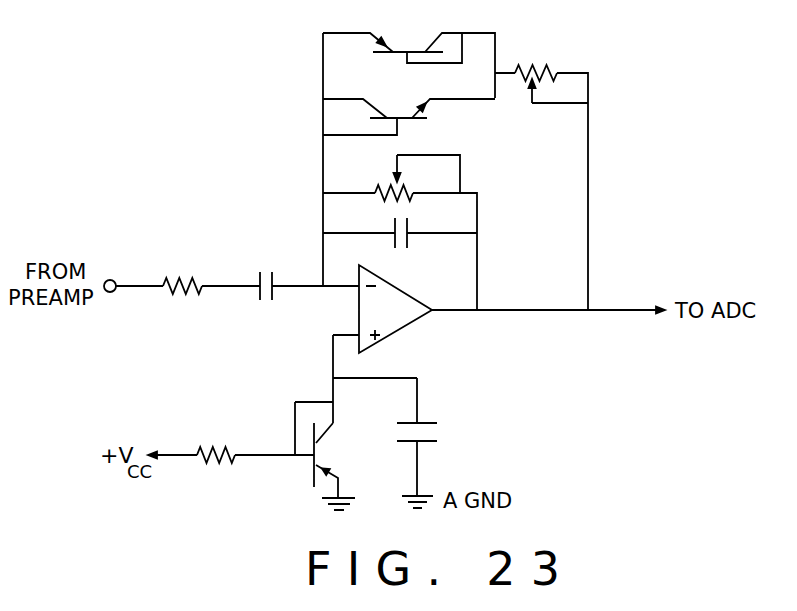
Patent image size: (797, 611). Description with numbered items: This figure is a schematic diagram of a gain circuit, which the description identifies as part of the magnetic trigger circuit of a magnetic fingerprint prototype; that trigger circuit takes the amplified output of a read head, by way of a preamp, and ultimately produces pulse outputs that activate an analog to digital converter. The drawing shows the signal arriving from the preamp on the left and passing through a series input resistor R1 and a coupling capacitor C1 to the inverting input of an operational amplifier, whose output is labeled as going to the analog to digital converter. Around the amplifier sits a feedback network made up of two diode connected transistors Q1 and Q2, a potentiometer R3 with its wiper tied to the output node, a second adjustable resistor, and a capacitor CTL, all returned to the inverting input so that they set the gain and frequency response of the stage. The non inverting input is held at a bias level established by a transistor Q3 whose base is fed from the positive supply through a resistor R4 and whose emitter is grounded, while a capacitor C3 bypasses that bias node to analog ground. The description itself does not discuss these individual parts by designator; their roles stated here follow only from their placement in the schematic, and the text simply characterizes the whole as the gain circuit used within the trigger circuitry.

The input resistor R1 is at (182, 272).
The input coupling capacitor C1 is at (267, 271).
The diode-connected transistor Q1 is at (409, 57).
The diode-connected transistor Q2 is at (409, 110).
The feedback potentiometer R3 is at (541, 174).
The feedback capacitor CTL is at (400, 225).
The bias transistor Q3 is at (330, 456).
The bias resistor R4 is at (221, 440).
The bypass capacitor C3 is at (436, 443).